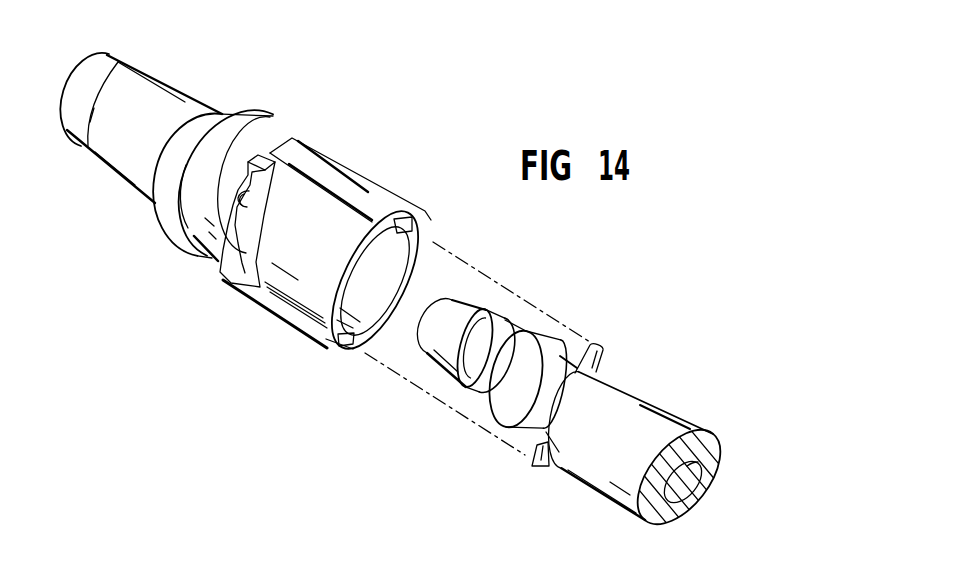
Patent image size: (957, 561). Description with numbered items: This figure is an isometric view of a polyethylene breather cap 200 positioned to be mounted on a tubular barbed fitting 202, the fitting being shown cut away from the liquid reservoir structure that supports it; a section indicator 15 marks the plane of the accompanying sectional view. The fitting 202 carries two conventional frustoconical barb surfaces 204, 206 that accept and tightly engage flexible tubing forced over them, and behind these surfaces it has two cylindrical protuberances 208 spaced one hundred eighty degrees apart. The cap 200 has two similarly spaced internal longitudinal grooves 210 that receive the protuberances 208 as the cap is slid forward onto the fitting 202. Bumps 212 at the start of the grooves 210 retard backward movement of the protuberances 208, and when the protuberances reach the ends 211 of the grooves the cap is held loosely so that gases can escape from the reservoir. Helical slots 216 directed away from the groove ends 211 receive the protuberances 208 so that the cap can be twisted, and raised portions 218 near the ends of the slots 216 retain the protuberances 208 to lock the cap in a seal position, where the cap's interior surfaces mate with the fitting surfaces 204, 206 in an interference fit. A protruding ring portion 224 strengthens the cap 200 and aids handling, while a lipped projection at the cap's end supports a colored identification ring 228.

The section line for FIG. 15 is at (61, 73).
The breather cap 200 is at (291, 90).
The tubular barbed fitting 202 is at (611, 289).
The frustoconical surface 204 is at (483, 310).
The frustoconical surface 206 is at (532, 333).
The cylindrical protuberances 208 is at (605, 349).
The internal longitudinal grooves 210 is at (414, 222).
The ends of the grooves 211 is at (250, 268).
The bumps 212 is at (340, 341).
The helical slots 216 is at (217, 255).
The raised portions 218 is at (260, 197).
The protruding ring portion 224 is at (178, 243).
The colored identification ring 228 is at (79, 128).